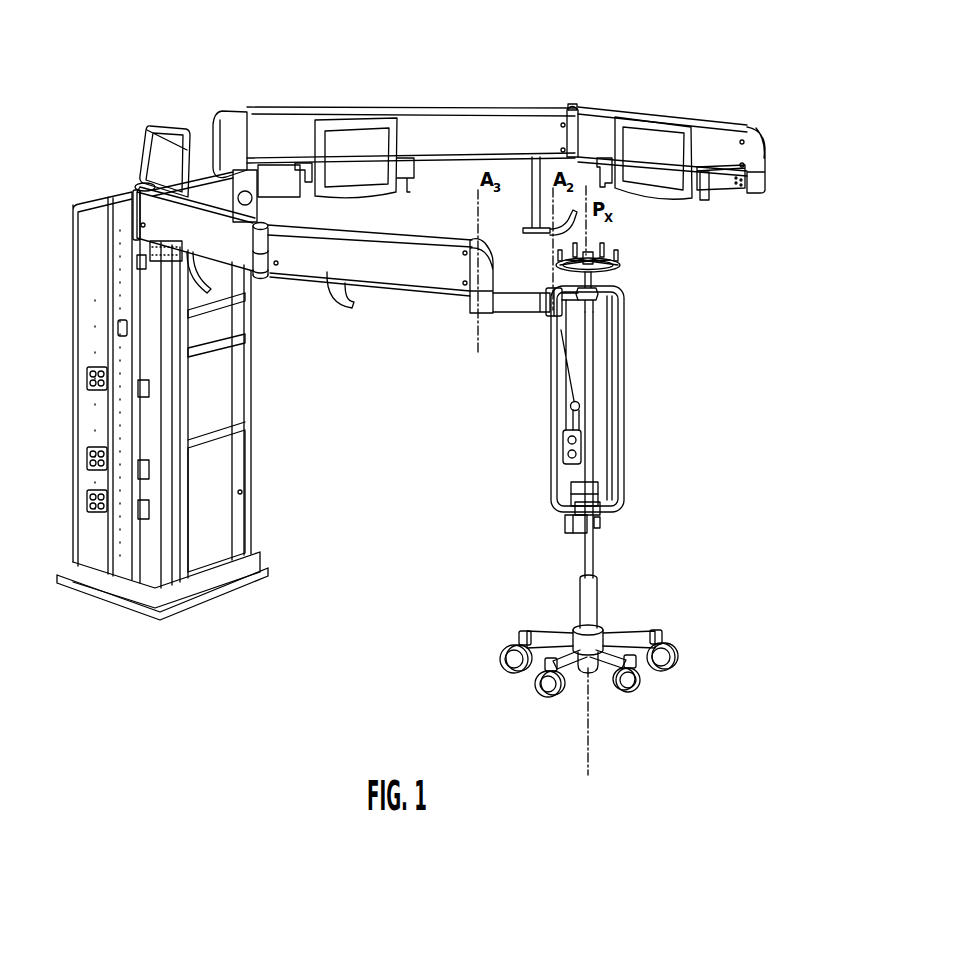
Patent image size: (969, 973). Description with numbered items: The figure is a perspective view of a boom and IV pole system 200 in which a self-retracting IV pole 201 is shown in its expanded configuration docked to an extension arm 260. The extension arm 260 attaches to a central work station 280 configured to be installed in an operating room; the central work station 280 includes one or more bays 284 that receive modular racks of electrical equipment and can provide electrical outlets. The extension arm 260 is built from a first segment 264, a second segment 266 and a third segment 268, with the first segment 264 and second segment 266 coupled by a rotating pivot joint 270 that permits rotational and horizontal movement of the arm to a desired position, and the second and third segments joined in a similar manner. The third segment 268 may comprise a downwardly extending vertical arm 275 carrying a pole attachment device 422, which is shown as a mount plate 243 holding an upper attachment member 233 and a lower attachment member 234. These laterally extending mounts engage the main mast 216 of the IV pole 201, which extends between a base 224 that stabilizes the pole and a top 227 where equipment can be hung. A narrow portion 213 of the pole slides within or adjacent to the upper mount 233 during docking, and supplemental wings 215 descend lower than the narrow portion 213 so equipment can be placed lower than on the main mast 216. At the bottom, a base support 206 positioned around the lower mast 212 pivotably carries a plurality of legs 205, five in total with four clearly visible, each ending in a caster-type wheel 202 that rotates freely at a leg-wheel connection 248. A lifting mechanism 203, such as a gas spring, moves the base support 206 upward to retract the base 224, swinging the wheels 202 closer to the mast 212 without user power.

The boom and IV pole system 200 is at (757, 100).
The IV pole 201 is at (664, 417).
The wheel 202 is at (498, 668).
The lifting mechanism 203 is at (580, 622).
The leg 205 is at (540, 637).
The base support 206 is at (593, 687).
The mast 212 is at (598, 587).
The narrow portion 213 is at (590, 512).
The wing 215 is at (552, 405).
The main mast 216 is at (588, 395).
The base 224 is at (612, 633).
The top 227 is at (620, 272).
The upper attachment member 233 is at (582, 492).
The lower attachment member 234 is at (580, 523).
The mount plate 243 is at (553, 474).
The leg-wheel connection 248 is at (517, 640).
The extension arm 260 is at (180, 130).
The first segment 264 is at (155, 220).
The second segment 266 is at (330, 272).
The third segment 268 is at (505, 315).
The rotating pivot joint 270 is at (390, 110).
The downwardly extending arm 275 is at (543, 337).
The central work station 280 is at (90, 343).
The bay 284 is at (225, 395).
The pole attachment device 422 is at (572, 537).